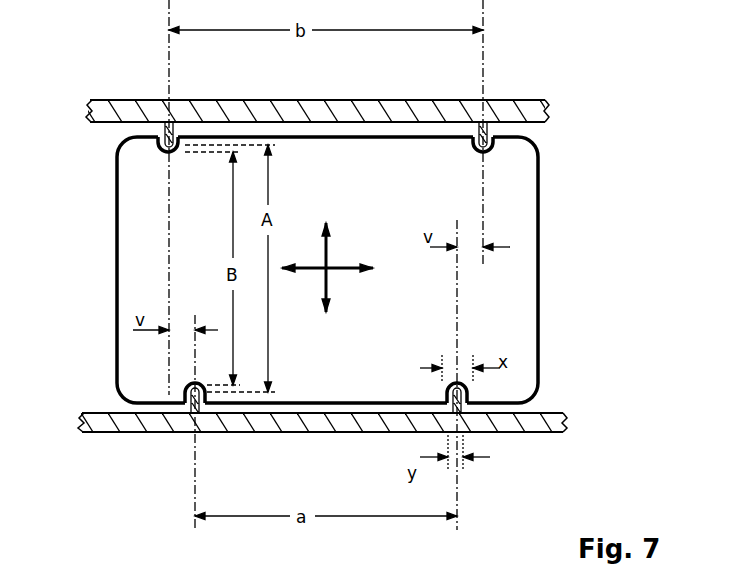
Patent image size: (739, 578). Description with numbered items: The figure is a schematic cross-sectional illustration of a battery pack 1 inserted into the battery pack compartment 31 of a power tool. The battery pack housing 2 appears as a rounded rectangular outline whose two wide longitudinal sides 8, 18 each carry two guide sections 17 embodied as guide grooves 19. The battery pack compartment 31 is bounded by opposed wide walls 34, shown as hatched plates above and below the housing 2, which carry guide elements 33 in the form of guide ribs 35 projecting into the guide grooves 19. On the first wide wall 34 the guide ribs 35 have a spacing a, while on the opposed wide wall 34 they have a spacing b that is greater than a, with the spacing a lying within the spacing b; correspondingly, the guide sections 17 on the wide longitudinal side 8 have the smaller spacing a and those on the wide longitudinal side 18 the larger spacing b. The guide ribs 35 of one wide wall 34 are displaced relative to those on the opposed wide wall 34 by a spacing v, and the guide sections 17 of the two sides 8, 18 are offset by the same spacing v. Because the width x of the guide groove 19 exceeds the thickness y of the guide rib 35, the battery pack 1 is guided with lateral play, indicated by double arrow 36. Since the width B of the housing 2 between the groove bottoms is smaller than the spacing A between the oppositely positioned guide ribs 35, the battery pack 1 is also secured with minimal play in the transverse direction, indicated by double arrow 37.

The battery pack 1 is at (562, 217).
The housing 2 is at (117, 262).
The wide longitudinal side 8 is at (373, 405).
The guide section 17 is at (167, 152).
The wide longitudinal side 18 is at (325, 135).
The guide groove 19 is at (482, 150).
The battery pack compartment 31 is at (110, 403).
The guide element 33 is at (150, 127).
The wide wall 34 is at (283, 125).
The guide rib 35 is at (168, 140).
The double arrow 36 is at (330, 265).
The double arrow 37 is at (328, 275).